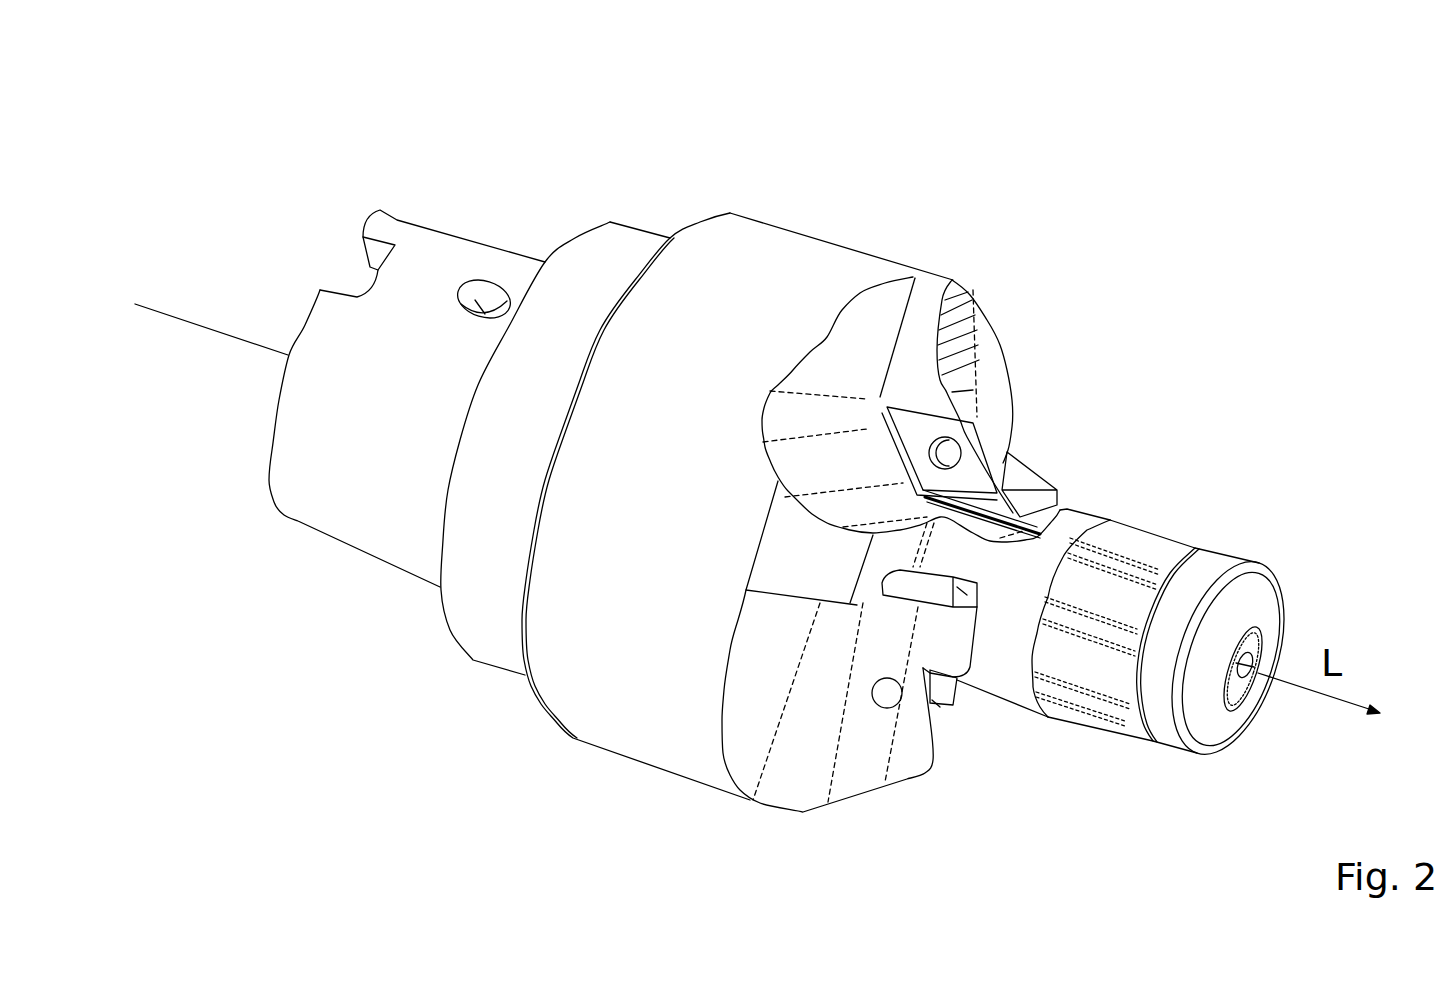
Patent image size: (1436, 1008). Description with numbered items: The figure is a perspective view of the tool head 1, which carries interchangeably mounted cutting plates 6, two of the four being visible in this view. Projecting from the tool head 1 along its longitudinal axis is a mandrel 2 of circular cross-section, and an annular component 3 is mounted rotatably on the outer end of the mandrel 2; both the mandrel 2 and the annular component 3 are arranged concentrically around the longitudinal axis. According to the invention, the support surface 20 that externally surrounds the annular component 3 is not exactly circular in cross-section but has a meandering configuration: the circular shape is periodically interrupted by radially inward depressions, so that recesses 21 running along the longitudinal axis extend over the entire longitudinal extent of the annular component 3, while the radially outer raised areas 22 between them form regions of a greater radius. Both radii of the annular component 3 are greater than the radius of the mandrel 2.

The tool head 1 is at (784, 457).
The mandrel 2 is at (1195, 592).
The annular component 3 is at (1169, 627).
The cutting plates 6 is at (975, 477).
The support surface 20 is at (1122, 589).
The recesses 21 is at (1117, 637).
The raised areas 22 is at (1143, 547).